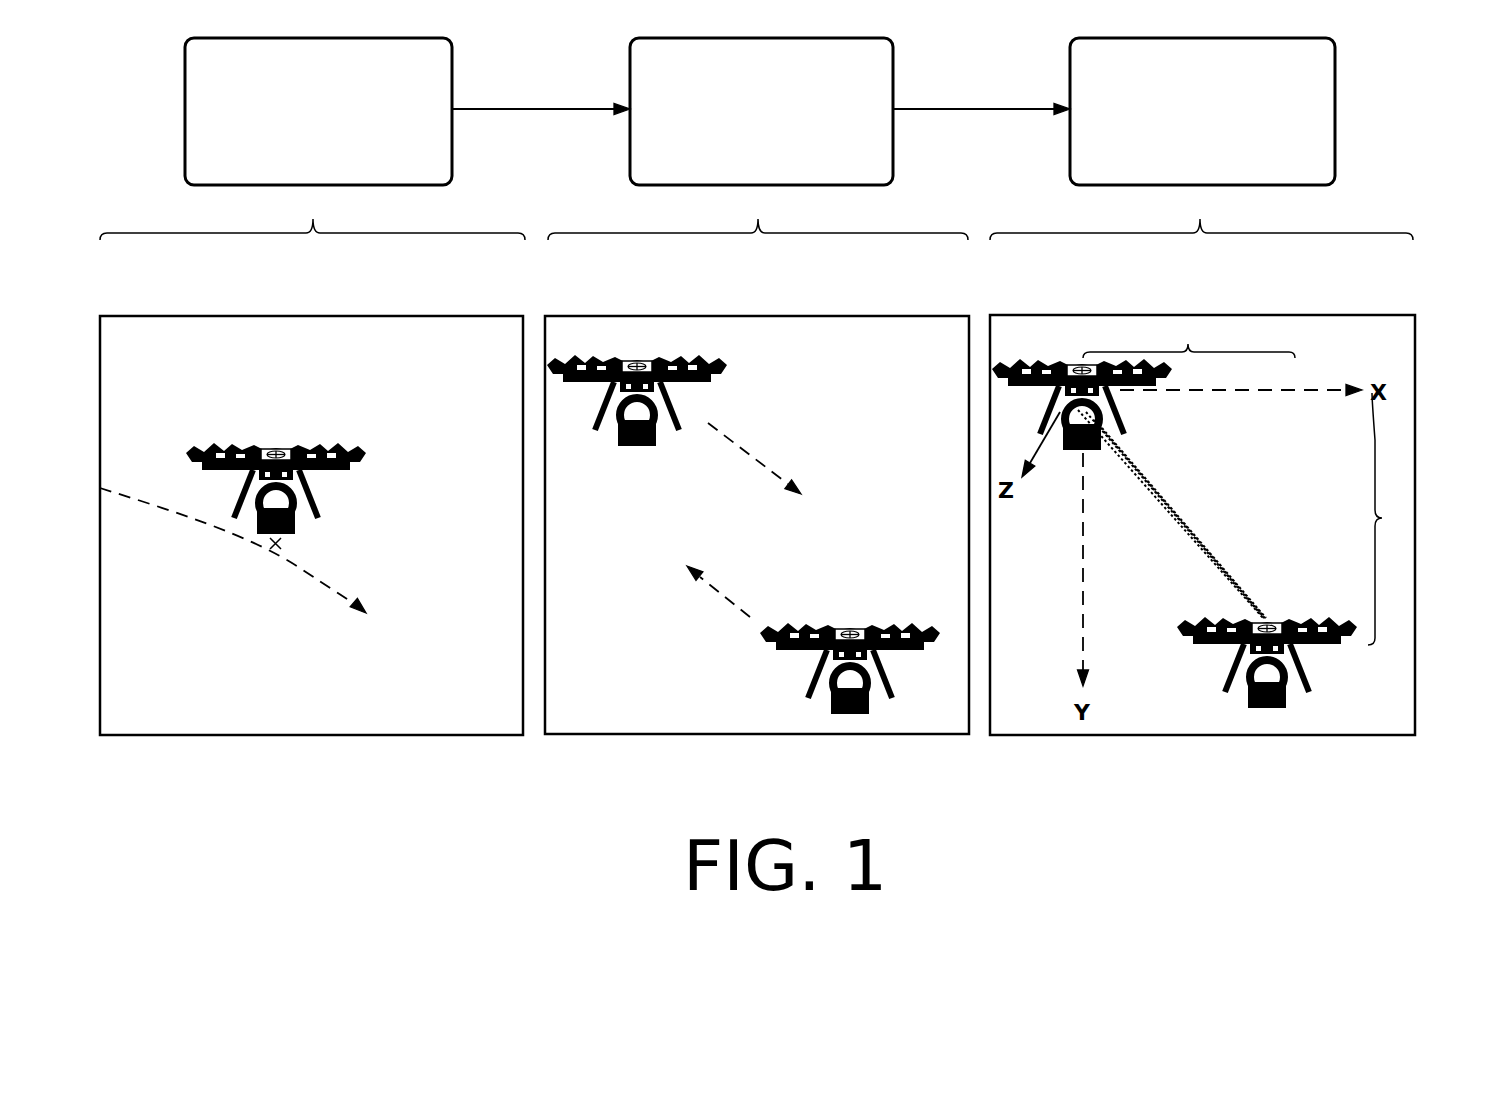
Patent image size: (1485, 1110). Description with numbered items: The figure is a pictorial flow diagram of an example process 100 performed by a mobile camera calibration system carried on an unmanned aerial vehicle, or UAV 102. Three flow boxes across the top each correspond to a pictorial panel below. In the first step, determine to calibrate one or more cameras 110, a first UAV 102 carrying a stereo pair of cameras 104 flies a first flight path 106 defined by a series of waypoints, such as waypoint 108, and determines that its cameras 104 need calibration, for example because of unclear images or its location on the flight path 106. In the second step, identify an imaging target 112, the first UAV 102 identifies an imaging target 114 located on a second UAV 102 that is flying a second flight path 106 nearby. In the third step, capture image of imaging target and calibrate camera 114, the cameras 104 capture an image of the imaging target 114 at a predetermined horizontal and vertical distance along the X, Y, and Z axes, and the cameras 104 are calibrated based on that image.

The process 100 is at (1390, 850).
The unmanned aerial vehicle 102 is at (212, 411).
The camera 104 is at (267, 447).
The flight path 106 is at (172, 488).
The waypoint 108 is at (281, 543).
The determine to calibrate one or more cameras 110 is at (318, 111).
The identify an imaging target 112 is at (761, 111).
The imaging target 114 is at (851, 628).